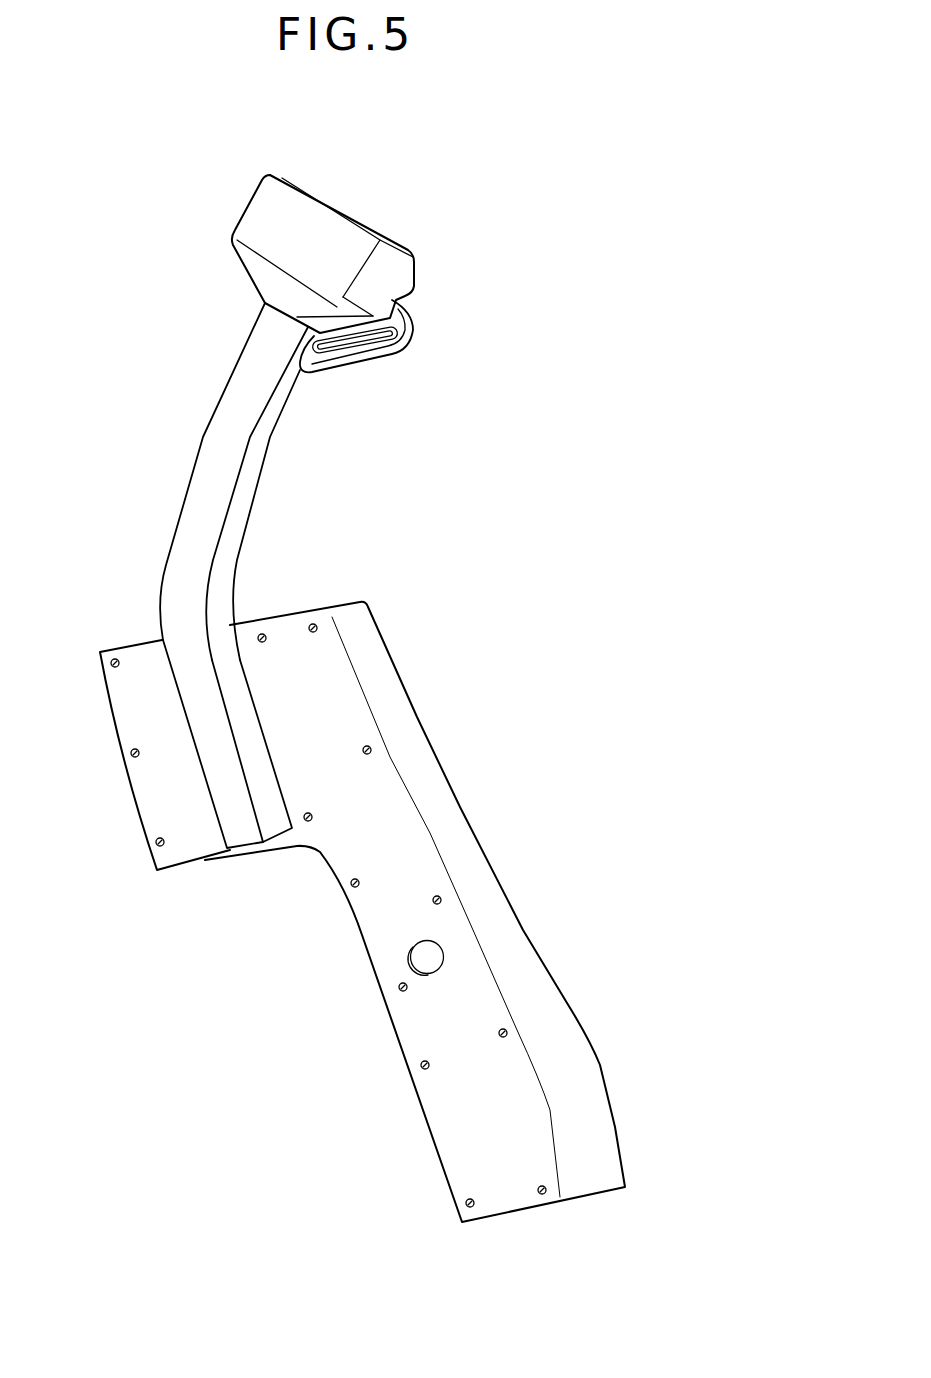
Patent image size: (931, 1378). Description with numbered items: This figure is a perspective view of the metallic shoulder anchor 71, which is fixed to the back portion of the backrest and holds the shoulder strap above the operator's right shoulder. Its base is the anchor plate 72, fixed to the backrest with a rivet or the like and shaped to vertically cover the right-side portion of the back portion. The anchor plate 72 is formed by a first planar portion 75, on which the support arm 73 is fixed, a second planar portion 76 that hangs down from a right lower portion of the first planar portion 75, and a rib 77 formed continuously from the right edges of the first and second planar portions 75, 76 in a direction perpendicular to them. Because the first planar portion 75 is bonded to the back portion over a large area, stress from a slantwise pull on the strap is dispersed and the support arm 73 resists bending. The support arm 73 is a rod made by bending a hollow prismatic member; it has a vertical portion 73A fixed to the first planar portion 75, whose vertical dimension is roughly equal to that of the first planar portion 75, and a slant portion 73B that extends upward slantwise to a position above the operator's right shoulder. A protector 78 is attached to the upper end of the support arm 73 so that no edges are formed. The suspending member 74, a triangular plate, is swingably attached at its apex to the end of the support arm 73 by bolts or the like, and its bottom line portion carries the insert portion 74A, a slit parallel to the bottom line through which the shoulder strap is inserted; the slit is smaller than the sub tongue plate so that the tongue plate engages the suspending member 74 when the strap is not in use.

The shoulder anchor 71 is at (456, 169).
The anchor plate 72 is at (295, 613).
The support arm 73 is at (195, 542).
The vertical portion 73A is at (235, 813).
The slant portion 73B is at (222, 432).
The suspending member 74 is at (410, 343).
The insert portion 74A is at (372, 342).
The first planar portion 75 is at (177, 780).
The second planar portion 76 is at (423, 1030).
The rib 77 is at (453, 823).
The protector 78 is at (266, 222).